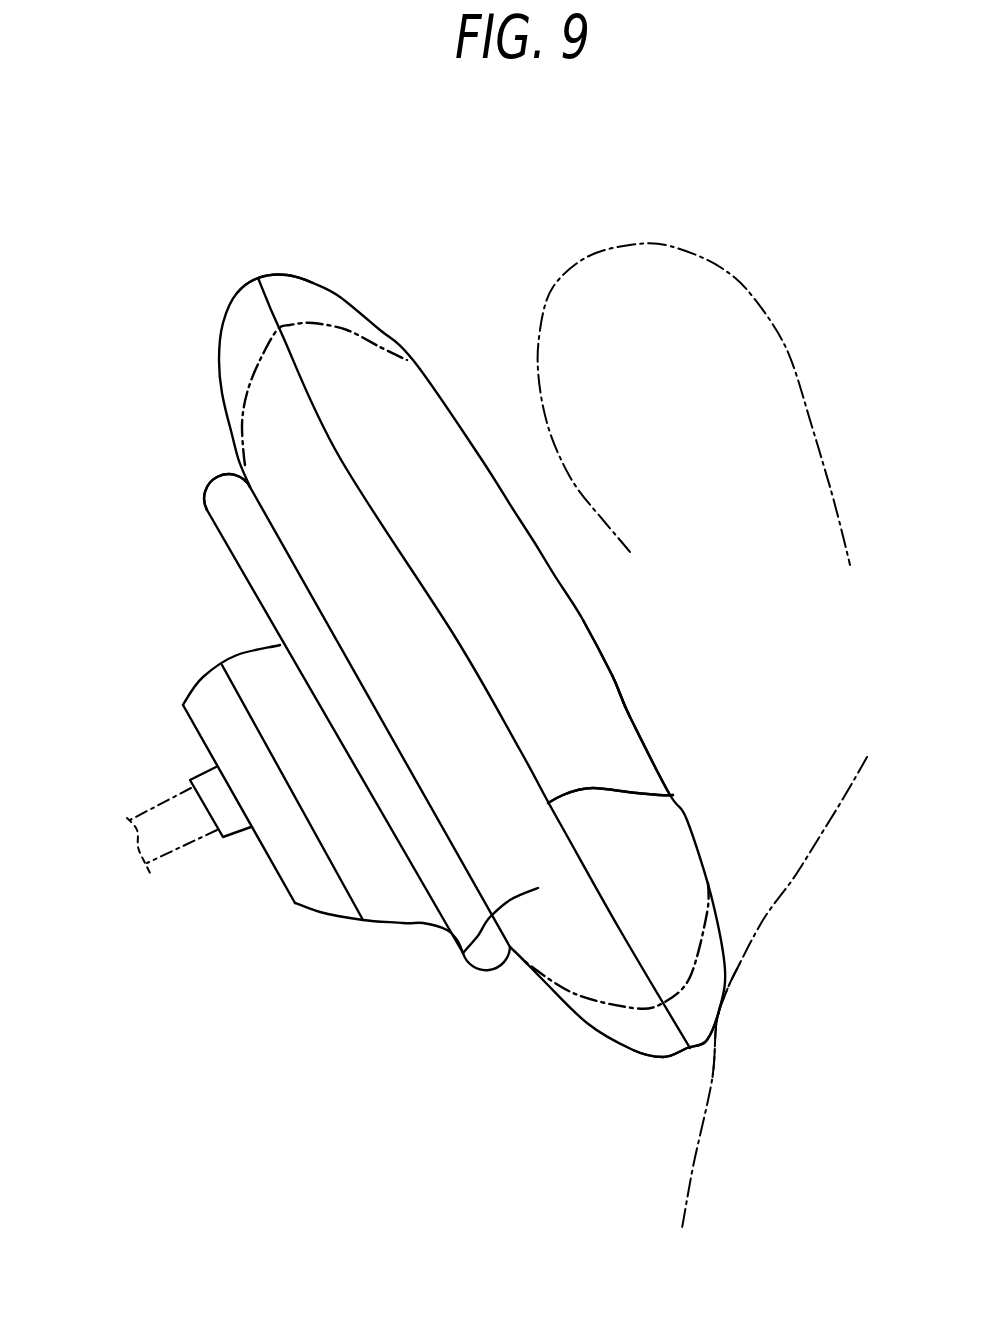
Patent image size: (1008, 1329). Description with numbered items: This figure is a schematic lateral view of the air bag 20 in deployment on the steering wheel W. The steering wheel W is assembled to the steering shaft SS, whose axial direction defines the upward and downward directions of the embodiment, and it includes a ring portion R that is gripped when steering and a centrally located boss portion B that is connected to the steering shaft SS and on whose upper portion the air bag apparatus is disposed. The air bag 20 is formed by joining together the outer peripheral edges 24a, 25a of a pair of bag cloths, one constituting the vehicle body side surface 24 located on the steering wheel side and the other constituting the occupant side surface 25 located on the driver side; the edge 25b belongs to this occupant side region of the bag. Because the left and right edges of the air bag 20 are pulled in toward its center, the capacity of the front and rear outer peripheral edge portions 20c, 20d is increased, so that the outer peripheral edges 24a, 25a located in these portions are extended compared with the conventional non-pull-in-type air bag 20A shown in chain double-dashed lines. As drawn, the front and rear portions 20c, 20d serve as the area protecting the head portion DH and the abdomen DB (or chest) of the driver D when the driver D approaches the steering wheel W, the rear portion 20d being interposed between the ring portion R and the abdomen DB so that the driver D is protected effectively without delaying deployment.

The air bag 20 is at (585, 620).
The front outer peripheral edge portion 20c is at (290, 277).
The rear outer peripheral edge portion 20d is at (633, 1070).
The conventional air bag 20A is at (323, 327).
The vehicle body side surface 24 is at (463, 953).
The outer peripheral edge 24a is at (673, 795).
The occupant side surface 25 is at (608, 735).
The outer peripheral edge 25a is at (687, 787).
The panel edge 25b is at (612, 675).
The steering wheel W is at (195, 508).
The ring portion R is at (223, 488).
The boss portion B is at (257, 878).
The steering shaft SS is at (157, 820).
The driver D is at (855, 767).
The head portion DH is at (692, 267).
The abdomen DB is at (730, 1020).